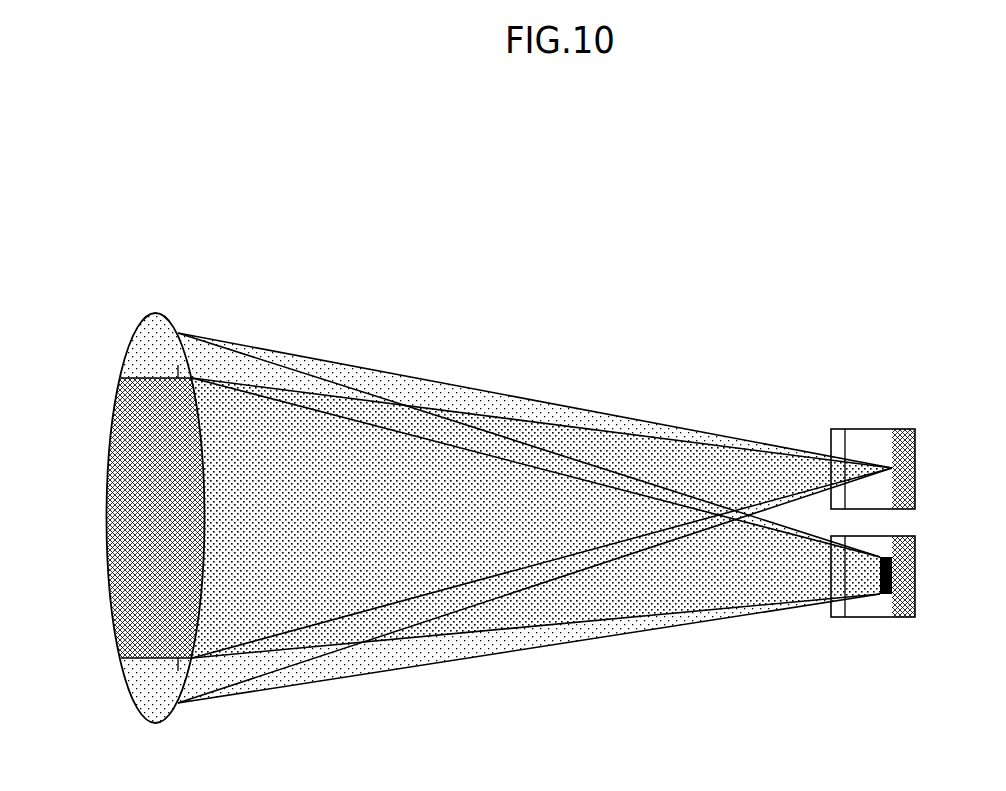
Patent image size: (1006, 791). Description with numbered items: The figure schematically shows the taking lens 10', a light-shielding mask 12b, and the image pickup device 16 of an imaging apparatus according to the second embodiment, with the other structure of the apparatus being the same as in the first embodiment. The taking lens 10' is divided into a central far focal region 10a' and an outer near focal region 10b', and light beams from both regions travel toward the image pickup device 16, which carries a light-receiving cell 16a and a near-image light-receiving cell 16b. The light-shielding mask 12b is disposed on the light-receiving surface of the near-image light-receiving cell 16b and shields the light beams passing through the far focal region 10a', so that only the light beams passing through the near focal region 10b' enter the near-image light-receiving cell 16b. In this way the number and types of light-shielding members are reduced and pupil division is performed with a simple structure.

The taking lens 10' is at (156, 490).
The far focal region 10a' is at (467, 518).
The near focal region 10b' is at (477, 519).
The image pickup device 16 is at (904, 507).
The light-receiving cell 16a is at (916, 468).
The near-image light-receiving cell 16b is at (904, 597).
The light-shielding mask 12b is at (886, 596).